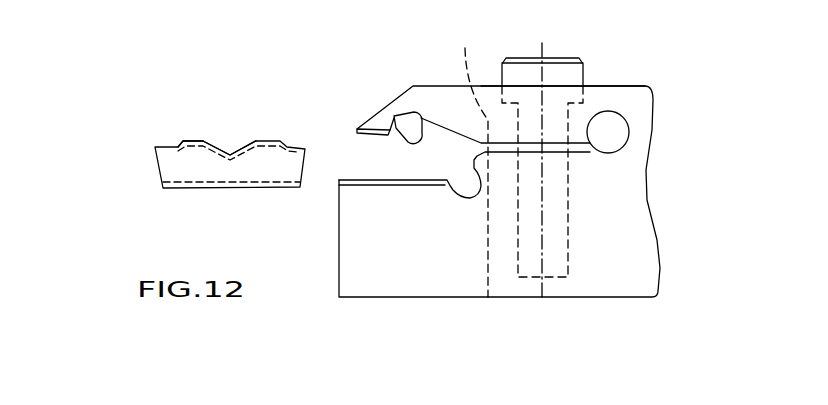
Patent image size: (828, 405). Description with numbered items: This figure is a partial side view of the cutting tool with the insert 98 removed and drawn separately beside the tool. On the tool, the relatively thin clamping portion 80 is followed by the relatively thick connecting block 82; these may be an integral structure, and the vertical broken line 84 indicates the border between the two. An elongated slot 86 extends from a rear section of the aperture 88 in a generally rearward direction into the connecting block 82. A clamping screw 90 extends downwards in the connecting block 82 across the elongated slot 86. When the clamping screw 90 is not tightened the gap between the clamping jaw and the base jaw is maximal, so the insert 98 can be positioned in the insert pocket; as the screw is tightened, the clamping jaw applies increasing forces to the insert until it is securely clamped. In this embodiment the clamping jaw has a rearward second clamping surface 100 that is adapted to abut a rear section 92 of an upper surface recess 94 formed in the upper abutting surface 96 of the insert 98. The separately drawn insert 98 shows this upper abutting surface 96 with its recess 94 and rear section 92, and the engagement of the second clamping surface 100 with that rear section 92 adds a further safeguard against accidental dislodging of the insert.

The clamping portion 80 is at (412, 76).
The connecting block 82 is at (633, 75).
The vertical broken line 84 is at (472, 162).
The elongated slot 86 is at (580, 153).
The aperture 88 is at (421, 126).
The clamping screw 90 is at (557, 57).
The rear section 92 is at (243, 141).
The upper surface recess 94 is at (232, 133).
The upper abutting surface 96 is at (178, 128).
The insert 98 is at (170, 165).
The second clamping surface 100 is at (422, 140).